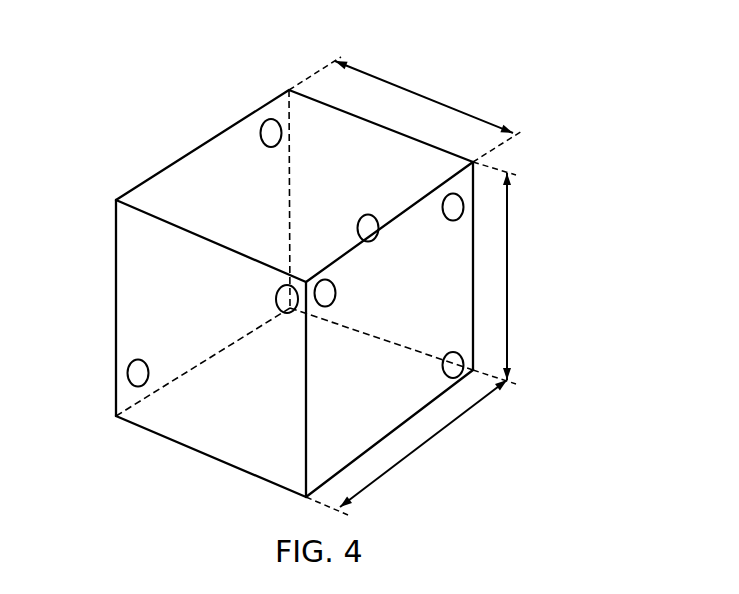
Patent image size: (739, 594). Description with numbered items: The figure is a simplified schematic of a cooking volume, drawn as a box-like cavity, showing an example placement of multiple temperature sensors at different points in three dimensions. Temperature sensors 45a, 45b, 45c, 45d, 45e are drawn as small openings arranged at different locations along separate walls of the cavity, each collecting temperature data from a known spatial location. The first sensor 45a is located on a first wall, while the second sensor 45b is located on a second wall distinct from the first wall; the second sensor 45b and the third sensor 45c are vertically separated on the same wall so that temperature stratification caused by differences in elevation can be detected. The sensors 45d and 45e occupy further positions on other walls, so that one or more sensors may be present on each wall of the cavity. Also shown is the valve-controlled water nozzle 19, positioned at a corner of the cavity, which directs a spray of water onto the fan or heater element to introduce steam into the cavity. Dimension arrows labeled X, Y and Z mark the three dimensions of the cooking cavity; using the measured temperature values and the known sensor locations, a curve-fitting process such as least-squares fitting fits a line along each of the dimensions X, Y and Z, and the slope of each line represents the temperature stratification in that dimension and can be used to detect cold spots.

The valve-controlled water nozzle 19 is at (275, 298).
The first temperature sensor 45a is at (260, 135).
The second temperature sensor 45b is at (462, 215).
The third temperature sensor 45c is at (462, 365).
The temperature sensor 45d is at (137, 386).
The temperature sensor 45e is at (363, 214).
The X dimension X is at (508, 277).
The Y dimension Y is at (432, 97).
The Z dimension Z is at (422, 448).